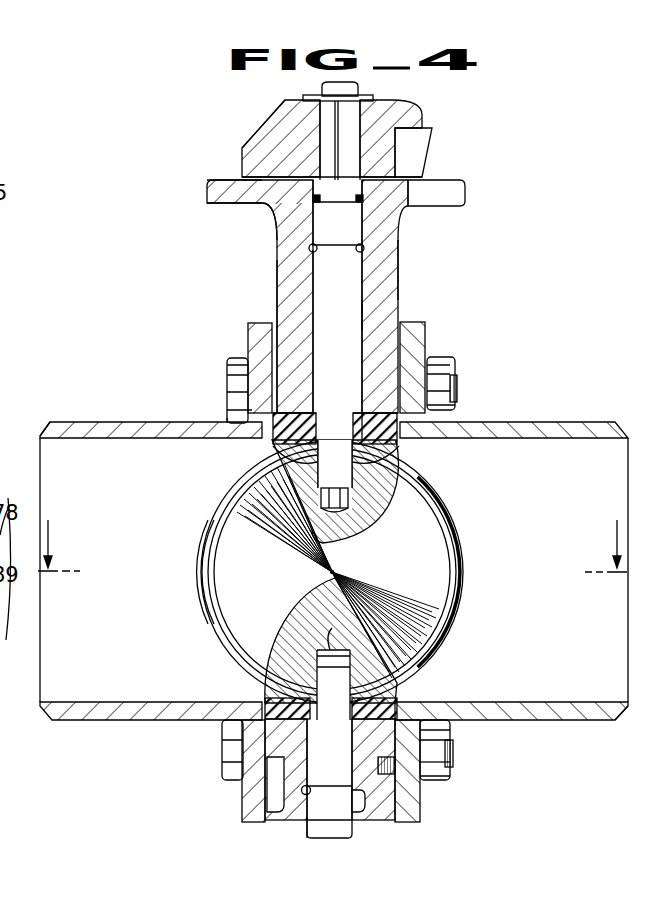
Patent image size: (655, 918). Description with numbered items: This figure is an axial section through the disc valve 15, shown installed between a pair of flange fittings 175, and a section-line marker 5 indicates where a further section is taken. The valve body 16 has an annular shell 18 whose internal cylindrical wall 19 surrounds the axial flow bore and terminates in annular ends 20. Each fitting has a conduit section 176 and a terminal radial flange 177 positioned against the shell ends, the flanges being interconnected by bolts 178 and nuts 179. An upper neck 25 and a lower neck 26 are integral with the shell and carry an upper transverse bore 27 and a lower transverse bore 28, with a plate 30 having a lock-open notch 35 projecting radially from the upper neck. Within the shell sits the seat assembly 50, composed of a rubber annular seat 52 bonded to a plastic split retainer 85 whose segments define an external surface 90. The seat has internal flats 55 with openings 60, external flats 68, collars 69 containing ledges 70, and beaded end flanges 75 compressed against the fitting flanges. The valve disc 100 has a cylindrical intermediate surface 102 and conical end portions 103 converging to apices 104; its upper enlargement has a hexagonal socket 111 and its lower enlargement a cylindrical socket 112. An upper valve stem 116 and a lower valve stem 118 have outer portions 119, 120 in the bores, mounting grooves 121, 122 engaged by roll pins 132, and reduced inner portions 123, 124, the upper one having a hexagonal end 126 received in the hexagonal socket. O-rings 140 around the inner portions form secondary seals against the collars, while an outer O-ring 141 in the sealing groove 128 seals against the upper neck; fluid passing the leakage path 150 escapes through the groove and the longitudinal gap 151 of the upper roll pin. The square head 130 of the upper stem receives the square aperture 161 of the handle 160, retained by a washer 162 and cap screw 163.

The section line 5 is at (332, 561).
The disc valve 15 is at (228, 163).
The valve body 16 is at (280, 413).
The annular shell 18 is at (268, 745).
The internal cylindrical wall 19 is at (433, 418).
The annular ends 20 is at (238, 396).
The upper neck 25 is at (386, 268).
The lower neck 26 is at (288, 778).
The upper transverse bore 27 is at (318, 262).
The lower transverse bore 28 is at (355, 824).
The plate 30 is at (208, 190).
The lock-open notch 35 is at (462, 195).
The seat assembly 50 is at (405, 450).
The annular seat 52 is at (400, 700).
The internal rectangular flats 55 is at (335, 585).
The openings 60 is at (300, 455).
The external annular flats 68 is at (306, 425).
The collars 69 is at (312, 428).
The ledges 70 is at (360, 748).
The end flanges 75 is at (248, 413).
The split retainer 85 is at (262, 708).
The external surface 90 is at (238, 376).
The valve disc 100 is at (462, 540).
The intermediate surface 102 is at (210, 541).
The conical end portions 103 is at (228, 563).
The apices 104 is at (340, 570).
The hexagonal socket 111 is at (352, 522).
The cylindrical socket 112 is at (300, 614).
The upper valve stem 116 is at (302, 288).
The lower valve stem 118 is at (307, 823).
The outer portion of upper stem 119 is at (355, 288).
The outer portion of lower stem 120 is at (327, 820).
The mounting groove 121 is at (364, 247).
The mounting groove 122 is at (382, 775).
The inner portion of upper stem 123 is at (350, 478).
The inner portion of lower stem 124 is at (310, 638).
The hexagonal end 126 is at (285, 487).
The upper annular sealing groove 128 is at (300, 213).
The square head 130 is at (298, 128).
The roll pins 132 is at (309, 247).
The O-rings 140 is at (366, 426).
The outer O-ring 141 is at (400, 206).
The leakage path 150 is at (362, 305).
The longitudinal gap 151 is at (326, 226).
The handle 160 is at (430, 118).
The square aperture 161 is at (325, 112).
The washer 162 is at (318, 96).
The cap screw 163 is at (360, 90).
The flange fittings 175 is at (80, 422).
The conduit section 176 is at (125, 613).
The terminal radial flange 177 is at (258, 325).
The bolts 178 is at (457, 378).
The nuts 179 is at (436, 366).